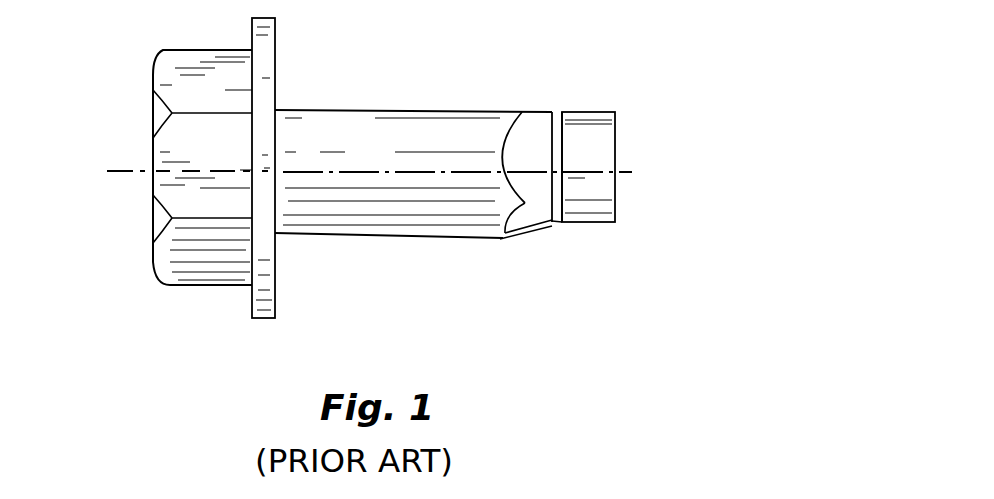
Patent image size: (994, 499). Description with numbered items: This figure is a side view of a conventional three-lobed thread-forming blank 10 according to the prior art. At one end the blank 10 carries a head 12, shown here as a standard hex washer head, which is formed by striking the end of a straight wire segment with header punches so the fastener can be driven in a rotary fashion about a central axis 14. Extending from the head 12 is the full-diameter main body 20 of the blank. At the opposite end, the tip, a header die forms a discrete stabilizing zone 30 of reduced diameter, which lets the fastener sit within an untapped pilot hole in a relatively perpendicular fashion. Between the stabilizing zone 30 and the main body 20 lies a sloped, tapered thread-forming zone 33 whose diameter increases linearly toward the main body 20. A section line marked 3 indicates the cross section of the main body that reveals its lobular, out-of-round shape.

The thread-forming blank 10 is at (387, 188).
The head 12 is at (219, 288).
The central axis 14 is at (632, 172).
The full-diameter main body 20 is at (399, 110).
The stabilizing zone 30 is at (563, 111).
The thread-forming zone 33 is at (505, 240).
The section line 3- 3 is at (481, 40).